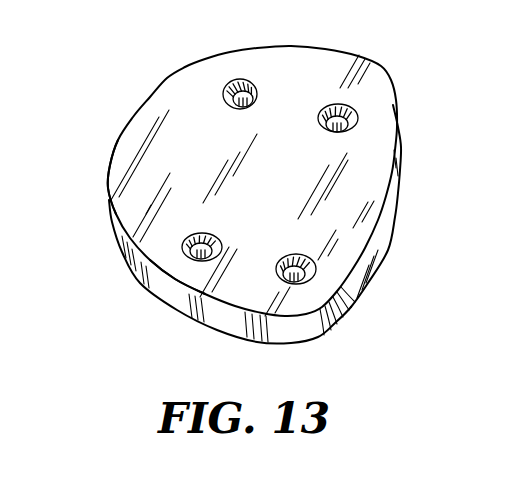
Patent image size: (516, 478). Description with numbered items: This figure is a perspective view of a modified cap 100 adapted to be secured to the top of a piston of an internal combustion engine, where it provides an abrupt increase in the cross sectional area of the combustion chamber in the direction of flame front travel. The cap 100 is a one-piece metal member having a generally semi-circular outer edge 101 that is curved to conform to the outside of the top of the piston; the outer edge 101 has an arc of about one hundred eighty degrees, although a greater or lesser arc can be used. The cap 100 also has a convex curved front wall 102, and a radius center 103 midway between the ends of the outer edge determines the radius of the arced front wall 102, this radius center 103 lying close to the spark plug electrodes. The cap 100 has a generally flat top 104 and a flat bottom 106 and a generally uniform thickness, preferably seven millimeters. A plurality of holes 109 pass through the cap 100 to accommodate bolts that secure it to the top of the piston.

The cap 100 is at (251, 195).
The outer edge 101 is at (180, 296).
The front wall 102 is at (393, 193).
The radius center 103 is at (115, 159).
The top 104 is at (188, 92).
The bottom 106 is at (230, 332).
The holes 109 is at (338, 103).